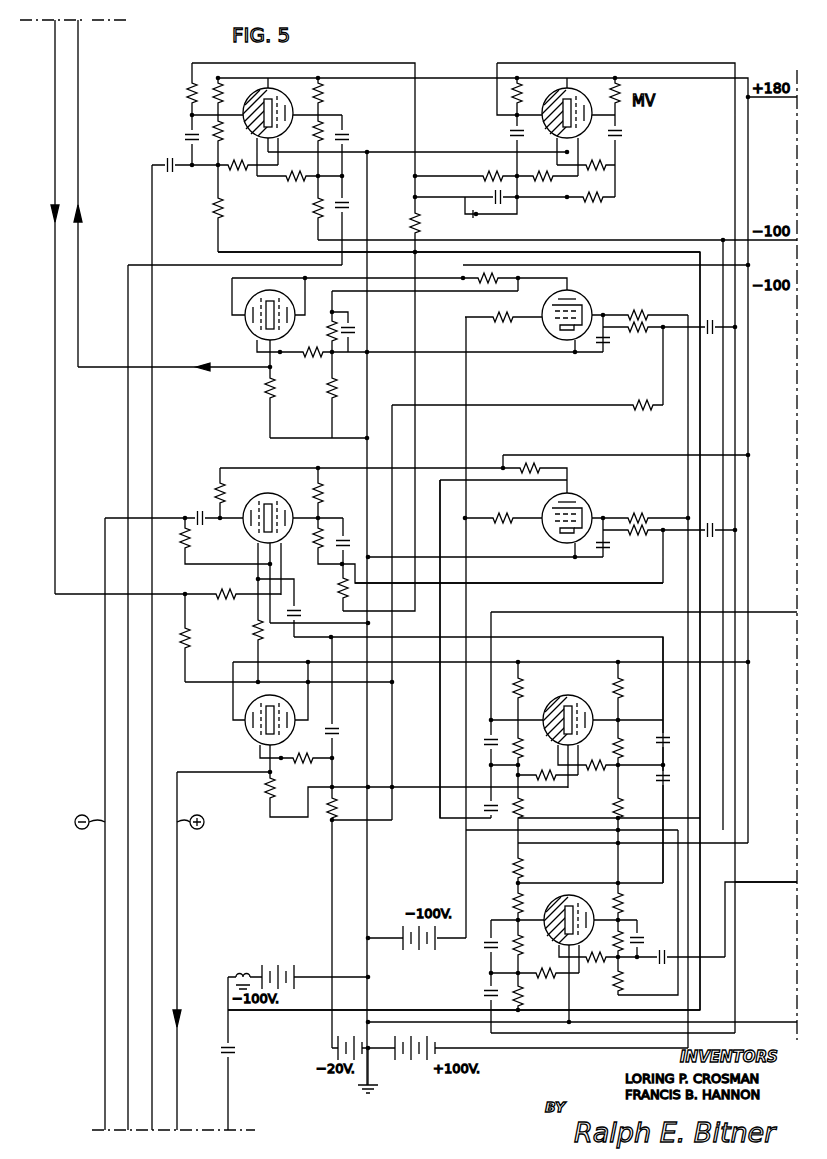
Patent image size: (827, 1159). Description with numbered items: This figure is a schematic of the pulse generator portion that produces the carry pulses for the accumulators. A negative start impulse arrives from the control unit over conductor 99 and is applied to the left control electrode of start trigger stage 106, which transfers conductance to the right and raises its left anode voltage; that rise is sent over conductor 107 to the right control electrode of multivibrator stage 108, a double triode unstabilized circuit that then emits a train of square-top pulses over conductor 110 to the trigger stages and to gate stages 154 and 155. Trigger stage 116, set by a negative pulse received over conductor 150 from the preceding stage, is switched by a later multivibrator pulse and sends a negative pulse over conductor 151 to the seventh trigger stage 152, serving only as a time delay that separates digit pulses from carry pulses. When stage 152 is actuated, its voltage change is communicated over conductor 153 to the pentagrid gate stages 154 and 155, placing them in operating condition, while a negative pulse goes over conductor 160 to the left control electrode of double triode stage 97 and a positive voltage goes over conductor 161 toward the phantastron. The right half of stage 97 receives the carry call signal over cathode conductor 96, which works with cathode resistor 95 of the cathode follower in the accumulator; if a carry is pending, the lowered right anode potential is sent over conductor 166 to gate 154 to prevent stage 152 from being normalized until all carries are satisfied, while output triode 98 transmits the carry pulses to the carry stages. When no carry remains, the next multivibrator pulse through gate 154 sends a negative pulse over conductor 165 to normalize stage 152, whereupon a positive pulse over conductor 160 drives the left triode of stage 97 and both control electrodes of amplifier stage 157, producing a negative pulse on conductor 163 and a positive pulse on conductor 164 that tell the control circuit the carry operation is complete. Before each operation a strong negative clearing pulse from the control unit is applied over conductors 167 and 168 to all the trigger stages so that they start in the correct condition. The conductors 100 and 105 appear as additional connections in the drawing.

The cathode conductor 96 is at (55, 77).
The input line 100 is at (78, 77).
The input coupling line 105 is at (152, 196).
The start trigger stage 106 is at (272, 95).
The conductor 107 is at (348, 63).
The multivibrator stage 108 is at (568, 88).
The conductor 110 is at (657, 63).
The conductor 168 is at (561, 252).
The output triode 98 is at (250, 305).
The gate stage 155 is at (578, 303).
The conductor 153 is at (466, 441).
The double triode stage 97 is at (275, 497).
The gate stage 154 is at (578, 502).
The conductor 163 is at (184, 518).
The conductor 166 is at (567, 583).
The conductor 161 is at (515, 612).
The conductor 160 is at (549, 637).
The cathode resistor 95 is at (190, 641).
The trigger stage 152 is at (574, 712).
The conductor 165 is at (442, 728).
The amplifier stage 157 is at (252, 733).
The conductor 164 is at (177, 798).
The trigger stage 116 is at (572, 895).
The conductor 151 is at (645, 883).
The conductor 150 is at (740, 882).
The conductor 99 is at (128, 959).
The conductor 167 is at (228, 1068).